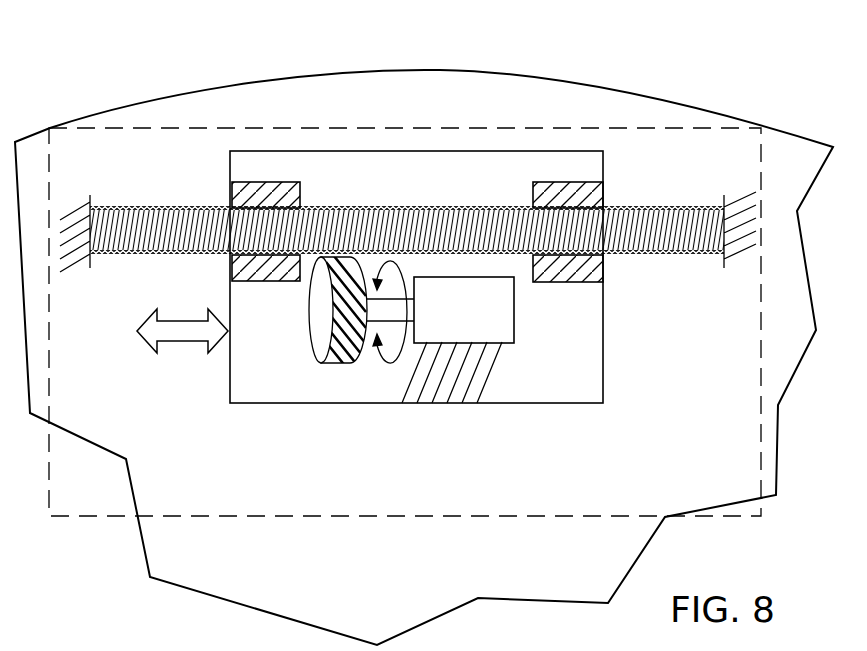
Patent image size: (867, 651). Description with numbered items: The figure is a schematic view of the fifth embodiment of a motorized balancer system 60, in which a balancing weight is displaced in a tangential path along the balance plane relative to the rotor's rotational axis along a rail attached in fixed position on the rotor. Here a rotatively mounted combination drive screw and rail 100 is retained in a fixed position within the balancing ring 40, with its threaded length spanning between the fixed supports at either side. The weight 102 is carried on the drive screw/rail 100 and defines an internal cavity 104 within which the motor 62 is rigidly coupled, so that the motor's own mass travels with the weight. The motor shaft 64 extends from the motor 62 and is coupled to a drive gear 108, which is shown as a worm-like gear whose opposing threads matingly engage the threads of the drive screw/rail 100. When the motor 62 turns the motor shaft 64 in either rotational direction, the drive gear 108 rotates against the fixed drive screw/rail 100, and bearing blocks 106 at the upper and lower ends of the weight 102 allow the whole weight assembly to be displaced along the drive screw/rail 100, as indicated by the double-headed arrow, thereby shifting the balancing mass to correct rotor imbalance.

The balancing ring 40 is at (606, 58).
The motorized balancer system 60 is at (782, 352).
The motor 62 is at (502, 318).
The motor shaft 64 is at (390, 308).
The combination drive screw and rail 100 is at (178, 208).
The weight 102 is at (605, 356).
The internal cavity 104 is at (552, 313).
The threaded bushings 106 is at (291, 188).
The drive gear 108 is at (350, 362).